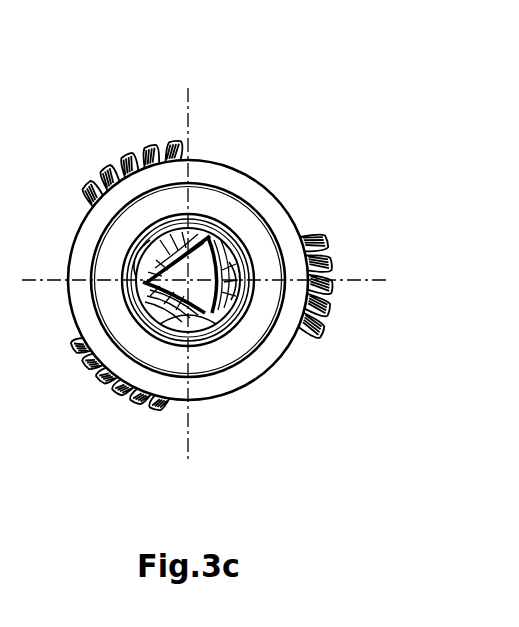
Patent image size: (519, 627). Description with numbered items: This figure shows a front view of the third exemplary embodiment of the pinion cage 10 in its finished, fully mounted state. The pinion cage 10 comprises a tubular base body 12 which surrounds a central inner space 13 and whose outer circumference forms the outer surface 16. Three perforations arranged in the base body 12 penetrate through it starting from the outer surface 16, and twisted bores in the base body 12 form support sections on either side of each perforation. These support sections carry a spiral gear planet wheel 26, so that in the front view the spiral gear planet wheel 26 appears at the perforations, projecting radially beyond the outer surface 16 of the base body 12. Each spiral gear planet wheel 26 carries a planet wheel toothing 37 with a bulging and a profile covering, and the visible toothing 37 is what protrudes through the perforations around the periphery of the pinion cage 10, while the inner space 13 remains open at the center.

The pinion cage 10 is at (315, 78).
The tubular base body 12 is at (257, 197).
The inner space 13 is at (133, 302).
The outer surface 16 is at (225, 163).
The spiral gear planet wheel 26 is at (220, 280).
The planet wheel toothing 37 is at (110, 100).